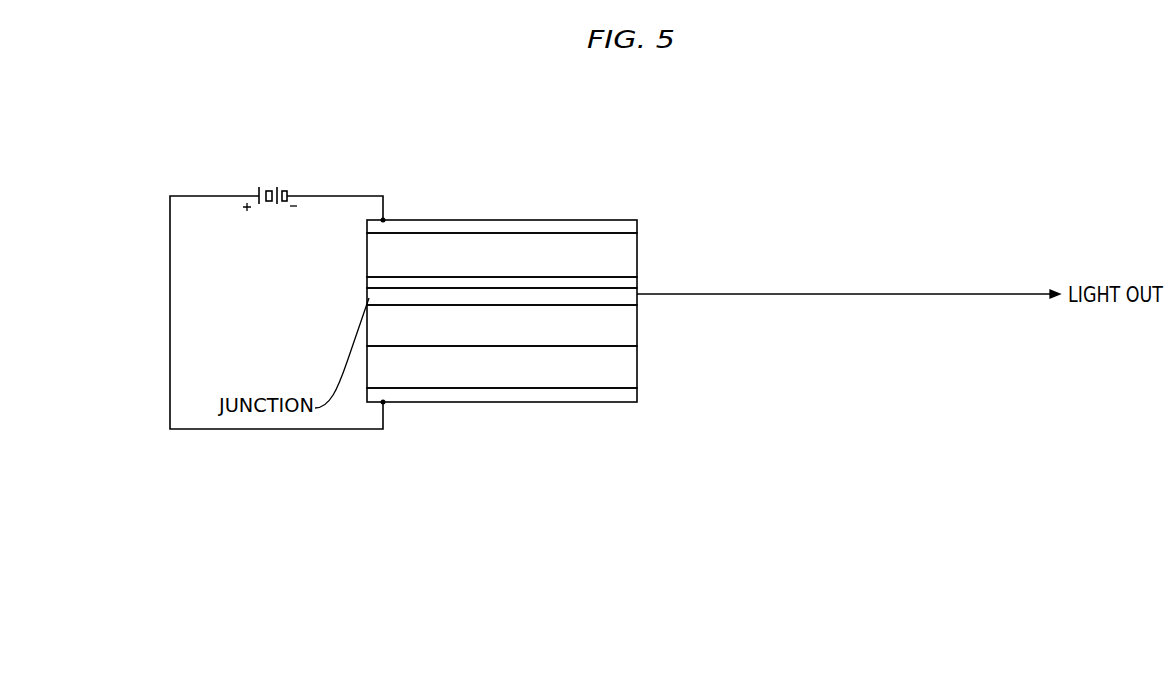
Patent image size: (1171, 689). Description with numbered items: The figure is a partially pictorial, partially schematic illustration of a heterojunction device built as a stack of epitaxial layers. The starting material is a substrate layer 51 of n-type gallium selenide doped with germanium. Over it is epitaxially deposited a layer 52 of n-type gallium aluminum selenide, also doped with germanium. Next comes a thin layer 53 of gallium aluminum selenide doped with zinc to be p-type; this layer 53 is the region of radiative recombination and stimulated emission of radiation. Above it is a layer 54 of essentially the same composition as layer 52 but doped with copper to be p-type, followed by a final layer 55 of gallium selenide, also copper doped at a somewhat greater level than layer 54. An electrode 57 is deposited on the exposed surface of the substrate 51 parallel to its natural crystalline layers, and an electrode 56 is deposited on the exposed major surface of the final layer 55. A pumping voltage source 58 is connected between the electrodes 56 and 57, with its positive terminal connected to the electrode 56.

The substrate layer 51 is at (566, 481).
The layer of n-type gallium aluminum selenide 52 is at (868, 384).
The layer of gallium aluminum selenide 53 is at (961, 243).
The layer 54 is at (955, 200).
The final layer 55 is at (608, 241).
The electrode 56 is at (513, 225).
The electrode 57 is at (618, 395).
The pumping voltage source 58 is at (278, 264).